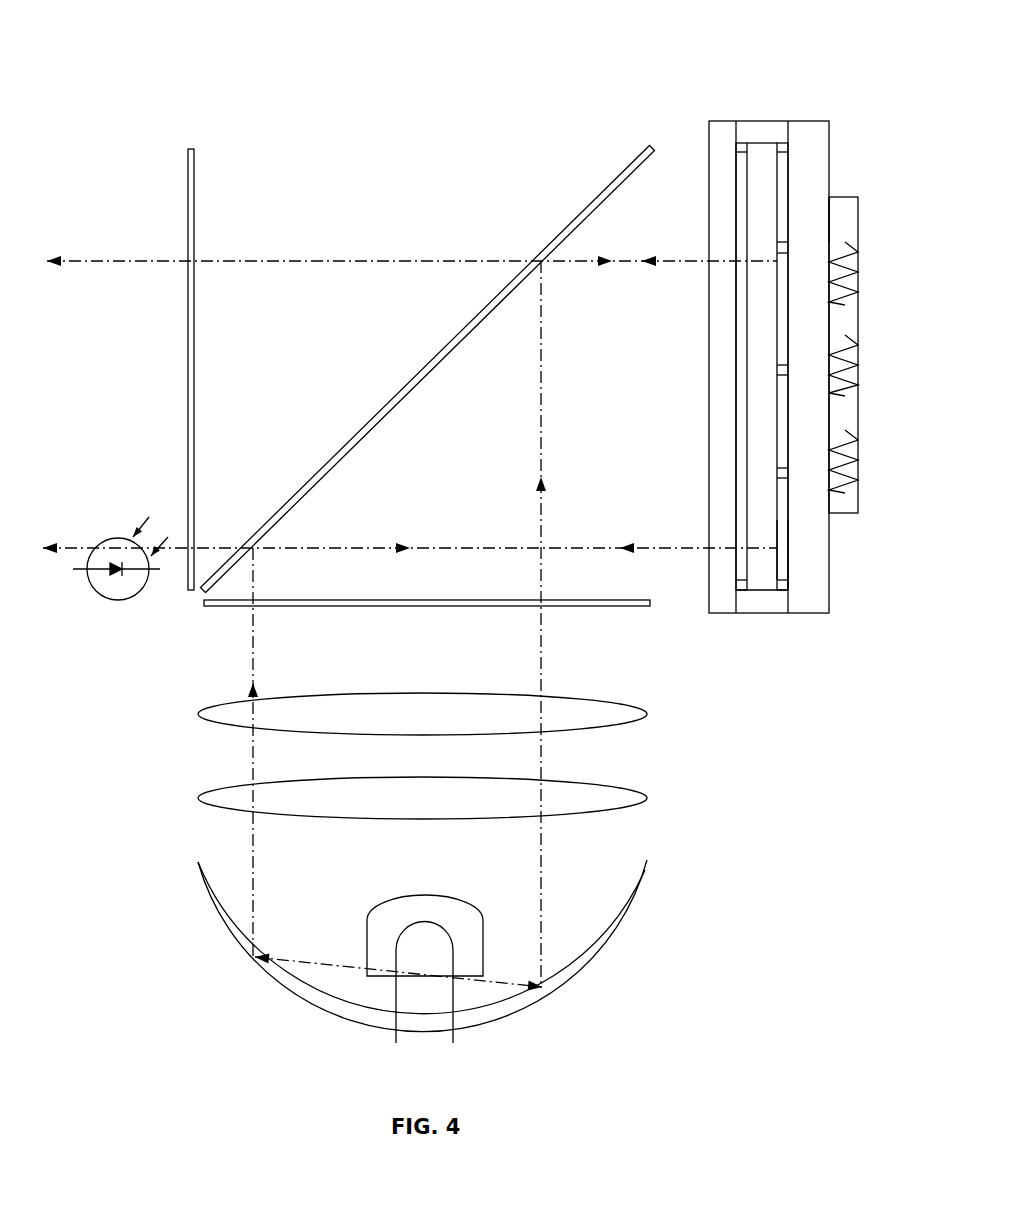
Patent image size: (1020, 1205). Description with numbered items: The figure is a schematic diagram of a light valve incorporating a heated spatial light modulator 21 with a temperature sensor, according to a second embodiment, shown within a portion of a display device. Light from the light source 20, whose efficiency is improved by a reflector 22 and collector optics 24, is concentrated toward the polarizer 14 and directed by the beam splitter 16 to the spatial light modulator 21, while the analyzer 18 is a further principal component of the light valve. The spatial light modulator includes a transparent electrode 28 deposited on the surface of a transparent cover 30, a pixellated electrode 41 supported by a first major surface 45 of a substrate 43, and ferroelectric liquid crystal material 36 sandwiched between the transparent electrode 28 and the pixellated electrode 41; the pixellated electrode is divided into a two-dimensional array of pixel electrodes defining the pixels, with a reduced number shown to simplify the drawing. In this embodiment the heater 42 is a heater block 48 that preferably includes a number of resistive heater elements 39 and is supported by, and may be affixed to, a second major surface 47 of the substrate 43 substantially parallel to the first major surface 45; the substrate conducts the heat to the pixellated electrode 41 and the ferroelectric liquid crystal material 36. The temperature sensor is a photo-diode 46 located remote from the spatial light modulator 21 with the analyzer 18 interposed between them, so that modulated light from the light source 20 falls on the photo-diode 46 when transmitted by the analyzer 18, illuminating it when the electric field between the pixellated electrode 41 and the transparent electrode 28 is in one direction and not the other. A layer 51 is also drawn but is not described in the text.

The polarizer 14 is at (235, 607).
The beam splitter 16 is at (551, 242).
The analyzer 18 is at (196, 201).
The light source 20 is at (478, 910).
The spatial light modulator 21 is at (862, 124).
The reflector 22 is at (633, 920).
The collector optics 24 is at (657, 822).
The transparent electrode 28 is at (736, 494).
The transparent cover 30 is at (720, 390).
The ferroelectric liquid crystal material 36 is at (762, 152).
The resistive heater elements 39 is at (838, 276).
The pixellated electrode 41 is at (783, 150).
The heater 42 is at (860, 412).
The substrate 43 is at (812, 513).
The first major surface 45 is at (787, 557).
The photo-diode 46 is at (95, 590).
The second major surface 47 is at (830, 180).
The heater block 48 is at (842, 222).
The spacer 51 is at (782, 535).